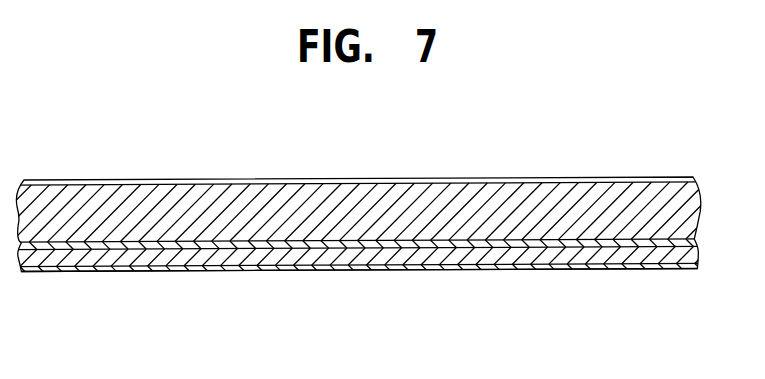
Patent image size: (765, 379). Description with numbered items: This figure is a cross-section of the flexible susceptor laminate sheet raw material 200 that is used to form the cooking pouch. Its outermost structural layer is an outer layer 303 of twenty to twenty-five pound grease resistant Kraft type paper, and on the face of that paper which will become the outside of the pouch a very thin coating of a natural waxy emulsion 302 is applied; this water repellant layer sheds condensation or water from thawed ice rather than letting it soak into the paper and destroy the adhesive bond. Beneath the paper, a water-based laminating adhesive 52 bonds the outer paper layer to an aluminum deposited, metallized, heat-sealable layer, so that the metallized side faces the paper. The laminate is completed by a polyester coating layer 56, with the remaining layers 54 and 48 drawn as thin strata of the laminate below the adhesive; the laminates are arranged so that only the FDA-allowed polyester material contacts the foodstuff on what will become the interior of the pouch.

The susceptor laminate sheet raw material 200 is at (642, 156).
The waxy emulsion 302 is at (593, 177).
The outer layer 303 is at (487, 200).
The water-based laminating adhesive 52 is at (627, 243).
The lower layer 54 is at (77, 258).
The polyester coating layer 56 is at (187, 273).
The outer bottom surface 48 is at (525, 268).